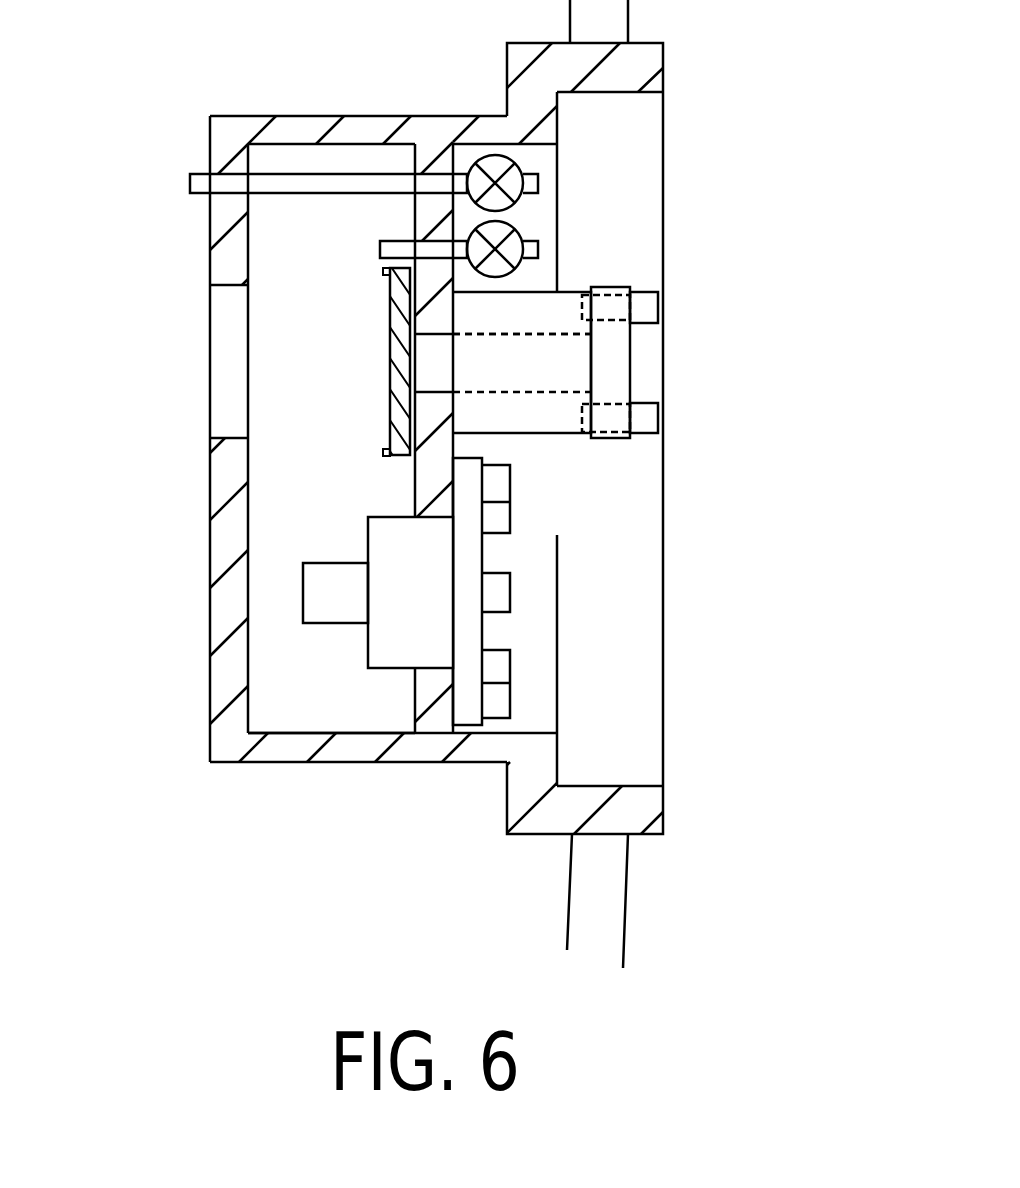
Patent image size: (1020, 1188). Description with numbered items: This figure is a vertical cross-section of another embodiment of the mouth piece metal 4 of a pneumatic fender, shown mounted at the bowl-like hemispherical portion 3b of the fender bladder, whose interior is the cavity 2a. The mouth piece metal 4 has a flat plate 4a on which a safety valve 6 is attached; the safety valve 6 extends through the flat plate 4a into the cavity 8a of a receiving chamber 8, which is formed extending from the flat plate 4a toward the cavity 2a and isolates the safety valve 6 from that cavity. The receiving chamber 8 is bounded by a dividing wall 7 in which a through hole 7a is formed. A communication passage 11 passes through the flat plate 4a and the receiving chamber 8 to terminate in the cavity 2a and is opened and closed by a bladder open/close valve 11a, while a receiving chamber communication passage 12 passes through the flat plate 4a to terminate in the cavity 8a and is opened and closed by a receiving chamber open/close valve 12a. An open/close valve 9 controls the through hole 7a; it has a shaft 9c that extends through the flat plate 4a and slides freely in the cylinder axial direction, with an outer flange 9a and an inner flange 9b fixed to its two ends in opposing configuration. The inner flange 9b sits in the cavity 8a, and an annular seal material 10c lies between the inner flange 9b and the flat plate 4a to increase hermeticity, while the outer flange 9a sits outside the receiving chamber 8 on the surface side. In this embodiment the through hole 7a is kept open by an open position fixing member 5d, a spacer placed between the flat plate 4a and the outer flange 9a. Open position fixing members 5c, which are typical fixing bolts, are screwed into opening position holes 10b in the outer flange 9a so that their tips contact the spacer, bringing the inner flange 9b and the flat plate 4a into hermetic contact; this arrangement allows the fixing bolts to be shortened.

The cavity 2a is at (142, 771).
The hemispherical portion 3b is at (620, 891).
The mouth piece metal 4 is at (713, 172).
The flat plate 4a is at (425, 480).
The open position fixing members 5c is at (656, 303).
The open position fixing member 5d is at (512, 425).
The safety valve 6 is at (373, 638).
The dividing wall 7 is at (218, 608).
The through hole 7a is at (212, 437).
The receiving chamber 8 is at (367, 762).
The cavity 8a is at (283, 722).
The open/close valve 9 is at (538, 399).
The outer flange 9a is at (622, 372).
The inner flange 9b is at (395, 355).
The shaft 9c is at (527, 340).
The opening position holes 10b is at (621, 309).
The seal material 10c is at (388, 270).
The communication passage 11 is at (200, 187).
The bladder open/close valve 11a is at (515, 175).
The receiving chamber communication passage 12 is at (380, 250).
The receiving chamber open/close valve 12a is at (515, 242).